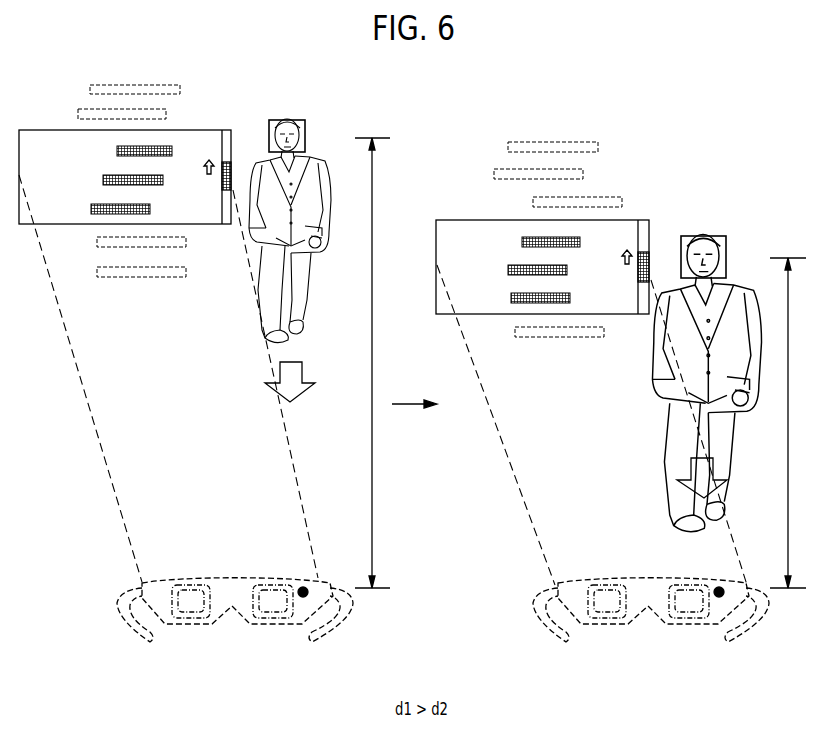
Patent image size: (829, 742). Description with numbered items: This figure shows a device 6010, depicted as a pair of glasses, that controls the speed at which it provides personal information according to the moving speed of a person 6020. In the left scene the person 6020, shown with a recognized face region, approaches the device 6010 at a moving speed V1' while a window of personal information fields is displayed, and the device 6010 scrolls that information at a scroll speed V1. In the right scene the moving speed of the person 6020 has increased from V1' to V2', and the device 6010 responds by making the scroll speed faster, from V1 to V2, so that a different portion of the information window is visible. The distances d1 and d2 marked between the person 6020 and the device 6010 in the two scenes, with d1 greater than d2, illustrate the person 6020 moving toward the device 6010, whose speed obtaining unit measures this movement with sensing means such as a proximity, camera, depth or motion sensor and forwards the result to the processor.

The device 6010 is at (228, 600).
The person 6020 is at (290, 118).
The scroll speed V1 is at (125, 179).
The moving speed of the person V1' is at (290, 394).
The scroll speed V2 is at (542, 239).
The moving speed of the person V2' is at (686, 478).
The first distance between display and person d1 is at (368, 363).
The second distance between display and person d2 is at (785, 423).